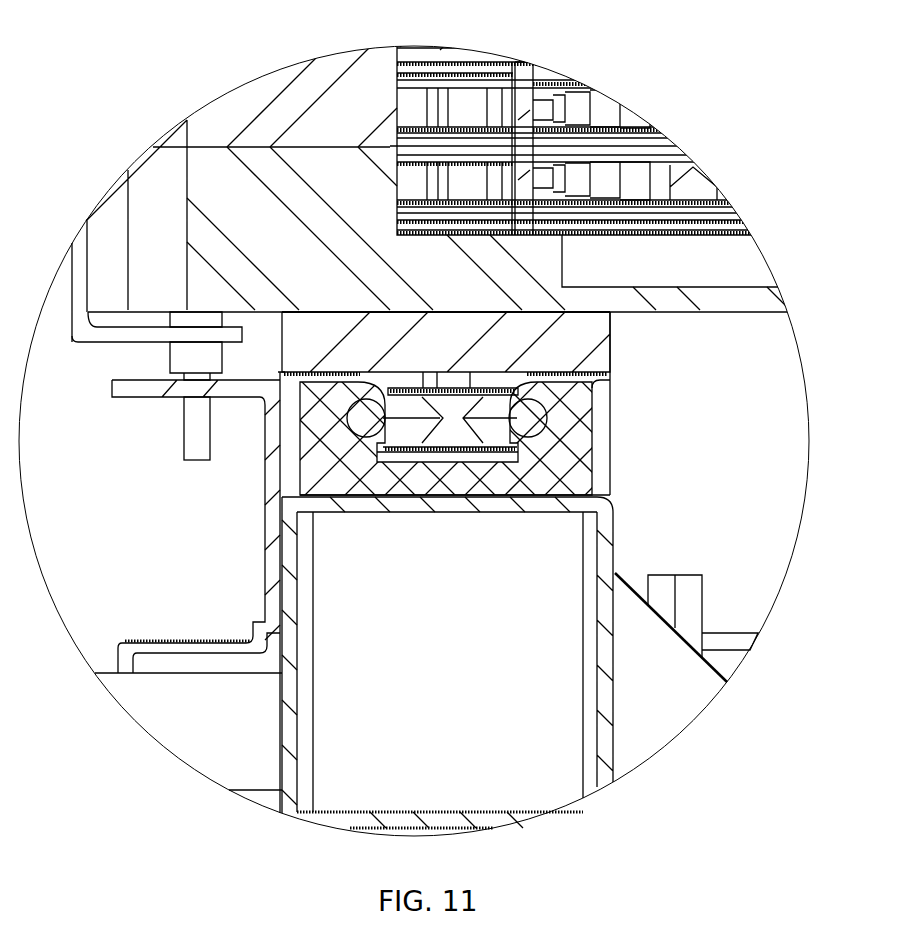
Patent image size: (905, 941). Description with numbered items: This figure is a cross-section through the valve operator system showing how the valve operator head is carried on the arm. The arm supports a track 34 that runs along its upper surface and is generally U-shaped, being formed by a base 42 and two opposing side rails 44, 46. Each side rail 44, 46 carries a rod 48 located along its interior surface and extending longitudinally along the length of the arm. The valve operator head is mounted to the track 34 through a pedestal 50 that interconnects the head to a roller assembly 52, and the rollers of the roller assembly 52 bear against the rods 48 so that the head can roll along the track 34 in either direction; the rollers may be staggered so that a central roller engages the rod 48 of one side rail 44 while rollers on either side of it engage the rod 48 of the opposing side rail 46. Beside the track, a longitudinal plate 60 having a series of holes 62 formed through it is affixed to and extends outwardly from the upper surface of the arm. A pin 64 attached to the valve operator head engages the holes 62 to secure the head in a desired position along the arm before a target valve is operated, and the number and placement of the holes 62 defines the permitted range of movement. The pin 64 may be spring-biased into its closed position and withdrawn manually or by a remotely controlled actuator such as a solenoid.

The track 34 is at (613, 427).
The base 42 is at (423, 500).
The side rail 44 is at (300, 427).
The side rail 46 is at (595, 388).
The rod 48 is at (350, 410).
The pedestal 50 is at (613, 337).
The roller assembly 52 is at (397, 378).
The longitudinal plate 60 is at (112, 387).
The holes 62 is at (613, 522).
The pin 64 is at (183, 413).